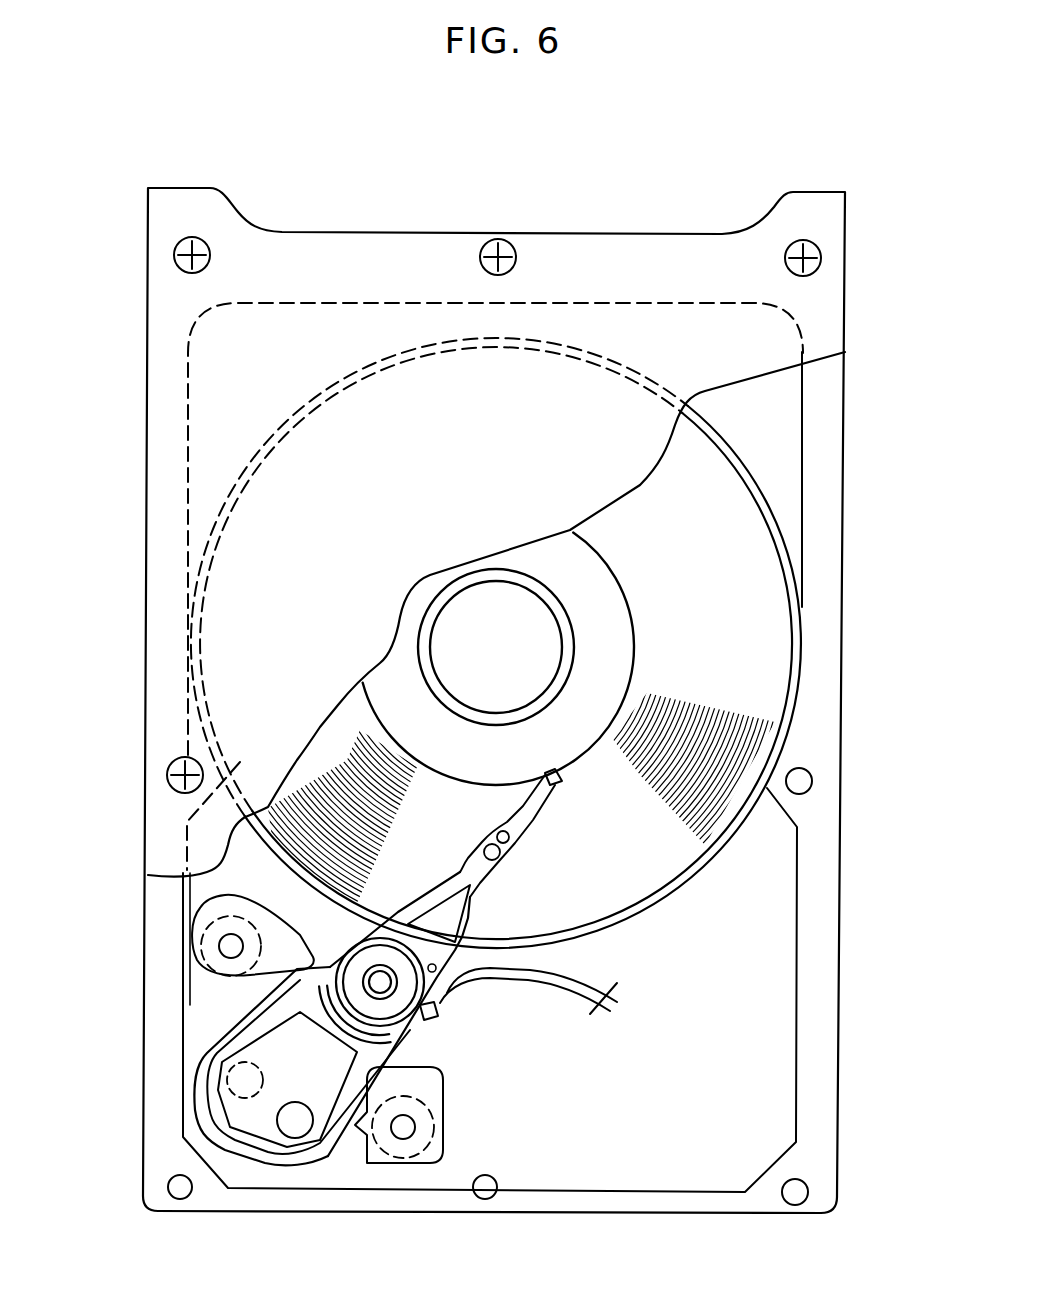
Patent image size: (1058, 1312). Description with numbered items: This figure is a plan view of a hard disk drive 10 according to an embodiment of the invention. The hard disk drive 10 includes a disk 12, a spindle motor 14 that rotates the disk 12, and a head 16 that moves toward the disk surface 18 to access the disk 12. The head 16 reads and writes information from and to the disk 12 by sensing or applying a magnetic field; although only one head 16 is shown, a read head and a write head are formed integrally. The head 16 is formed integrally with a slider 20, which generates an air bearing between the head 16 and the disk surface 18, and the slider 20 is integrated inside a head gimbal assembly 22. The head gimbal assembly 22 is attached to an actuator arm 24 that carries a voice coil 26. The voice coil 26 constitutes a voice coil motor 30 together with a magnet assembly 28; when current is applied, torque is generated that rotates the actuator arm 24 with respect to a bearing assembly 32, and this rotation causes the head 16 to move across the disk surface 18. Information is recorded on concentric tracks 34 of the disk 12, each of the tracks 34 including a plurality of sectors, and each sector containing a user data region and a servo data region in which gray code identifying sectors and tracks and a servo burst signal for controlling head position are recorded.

The hard disk drive 10 is at (680, 171).
The disk 12 is at (756, 580).
The spindle motor 14 is at (471, 622).
The head 16 is at (557, 783).
The disk surface 18 is at (712, 668).
The slider 20 is at (530, 805).
The head gimbal assembly 22 is at (482, 919).
The actuator arm 24 is at (297, 969).
The voice coil 26 is at (217, 1070).
The magnet assembly 28 is at (228, 1008).
The voice coil motor 30 is at (350, 1142).
The bearing assembly 32 is at (393, 1000).
The tracks 34 is at (347, 770).